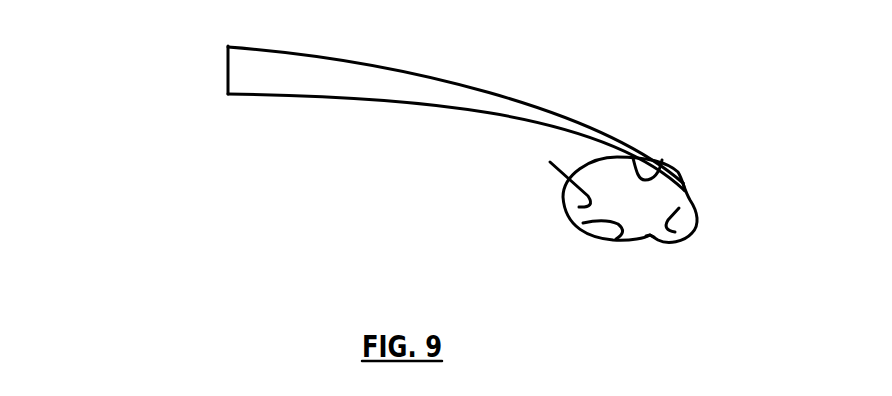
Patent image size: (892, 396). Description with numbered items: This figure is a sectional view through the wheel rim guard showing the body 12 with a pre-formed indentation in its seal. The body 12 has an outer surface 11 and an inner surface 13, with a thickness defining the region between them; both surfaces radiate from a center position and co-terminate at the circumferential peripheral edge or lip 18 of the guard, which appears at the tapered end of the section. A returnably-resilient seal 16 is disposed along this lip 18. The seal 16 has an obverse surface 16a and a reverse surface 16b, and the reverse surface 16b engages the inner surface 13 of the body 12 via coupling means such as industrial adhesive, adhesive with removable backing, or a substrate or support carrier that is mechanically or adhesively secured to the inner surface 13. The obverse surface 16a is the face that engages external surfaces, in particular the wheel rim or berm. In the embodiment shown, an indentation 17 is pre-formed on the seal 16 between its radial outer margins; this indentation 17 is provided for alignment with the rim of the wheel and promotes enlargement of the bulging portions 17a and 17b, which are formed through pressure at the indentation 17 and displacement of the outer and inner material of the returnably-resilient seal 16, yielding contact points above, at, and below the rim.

The outer surface 11 is at (252, 46).
The body 12 is at (228, 70).
The inner surface 13 is at (327, 102).
The returnably-resilient seal 16 is at (647, 215).
The obverse surface 16a is at (583, 223).
The reverse surface 16b is at (633, 158).
The indentation 17 is at (649, 237).
The bulging portion 17a is at (675, 232).
The bulging portion 17b is at (541, 178).
The circumferential peripheral edge or lip 18 is at (678, 172).